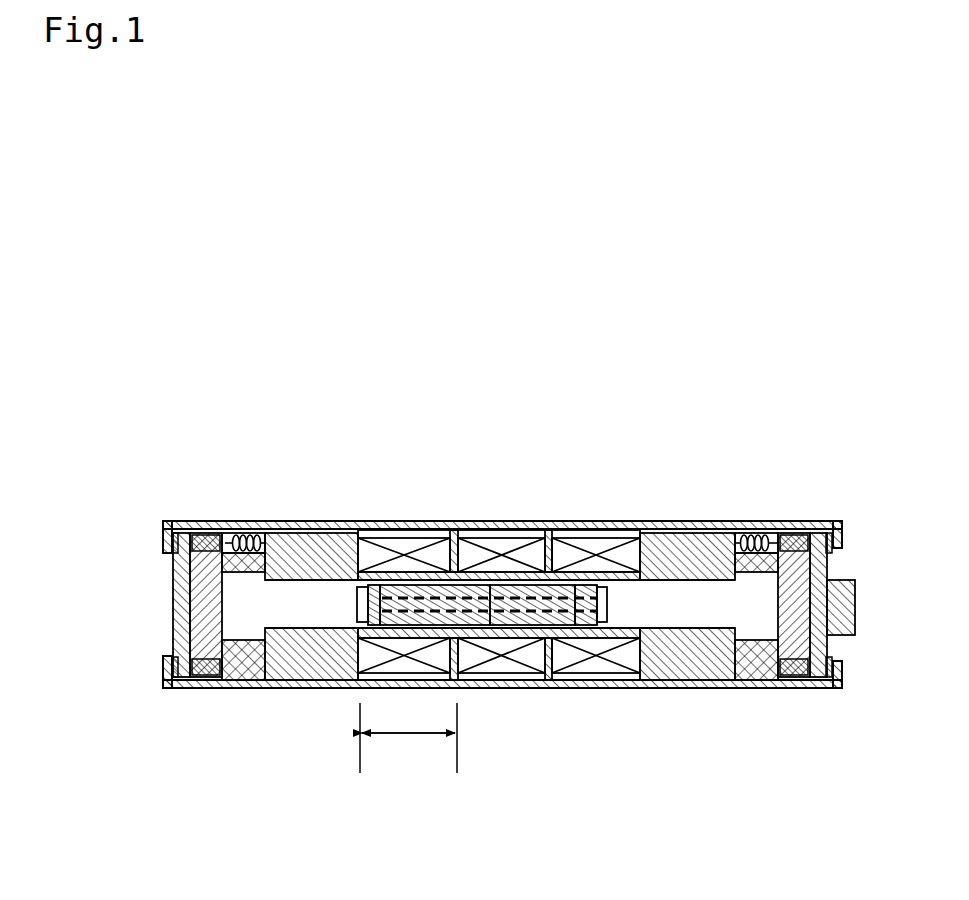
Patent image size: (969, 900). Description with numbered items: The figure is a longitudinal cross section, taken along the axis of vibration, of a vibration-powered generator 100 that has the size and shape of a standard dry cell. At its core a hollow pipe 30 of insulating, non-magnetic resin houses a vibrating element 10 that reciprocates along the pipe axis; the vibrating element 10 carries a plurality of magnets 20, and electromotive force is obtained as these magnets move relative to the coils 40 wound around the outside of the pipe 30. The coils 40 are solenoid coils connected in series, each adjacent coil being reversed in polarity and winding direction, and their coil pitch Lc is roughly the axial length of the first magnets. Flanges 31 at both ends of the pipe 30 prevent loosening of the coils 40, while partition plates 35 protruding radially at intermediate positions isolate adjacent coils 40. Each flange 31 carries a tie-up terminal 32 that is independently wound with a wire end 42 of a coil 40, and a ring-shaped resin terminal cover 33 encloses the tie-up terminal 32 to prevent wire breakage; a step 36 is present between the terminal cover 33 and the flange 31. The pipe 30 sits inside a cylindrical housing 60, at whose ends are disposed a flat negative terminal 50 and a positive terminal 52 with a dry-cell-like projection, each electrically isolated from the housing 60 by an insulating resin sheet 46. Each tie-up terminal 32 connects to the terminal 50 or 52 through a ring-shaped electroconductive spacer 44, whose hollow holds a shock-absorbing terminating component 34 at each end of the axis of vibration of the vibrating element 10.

The vibration-powered generator 100 is at (226, 386).
The vibrating element 10 is at (611, 600).
The magnets 20 is at (533, 622).
The pipe 30 is at (352, 582).
The flanges 31 is at (330, 523).
The tie-up terminals 32 is at (257, 527).
The terminal cover 33 is at (247, 655).
The terminating component 34 is at (195, 620).
The partition plates 35 is at (565, 523).
The step 36 is at (258, 628).
The coils 40 is at (420, 528).
The wire end 42 is at (237, 527).
The electroconductive spacer 44 is at (209, 527).
The resin sheet 46 is at (172, 545).
The terminal 50 is at (181, 582).
The terminal 52 is at (840, 600).
The housing 60 is at (497, 523).